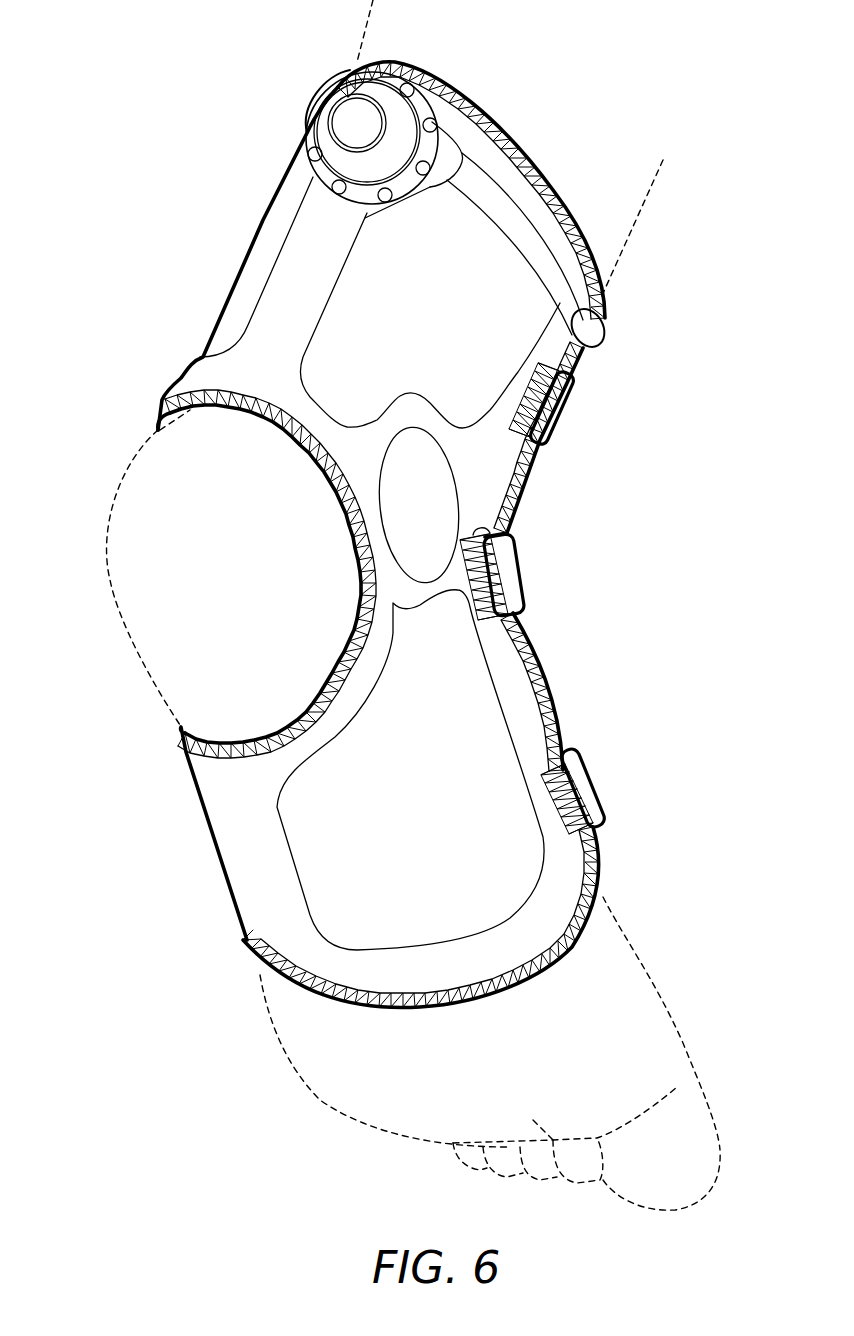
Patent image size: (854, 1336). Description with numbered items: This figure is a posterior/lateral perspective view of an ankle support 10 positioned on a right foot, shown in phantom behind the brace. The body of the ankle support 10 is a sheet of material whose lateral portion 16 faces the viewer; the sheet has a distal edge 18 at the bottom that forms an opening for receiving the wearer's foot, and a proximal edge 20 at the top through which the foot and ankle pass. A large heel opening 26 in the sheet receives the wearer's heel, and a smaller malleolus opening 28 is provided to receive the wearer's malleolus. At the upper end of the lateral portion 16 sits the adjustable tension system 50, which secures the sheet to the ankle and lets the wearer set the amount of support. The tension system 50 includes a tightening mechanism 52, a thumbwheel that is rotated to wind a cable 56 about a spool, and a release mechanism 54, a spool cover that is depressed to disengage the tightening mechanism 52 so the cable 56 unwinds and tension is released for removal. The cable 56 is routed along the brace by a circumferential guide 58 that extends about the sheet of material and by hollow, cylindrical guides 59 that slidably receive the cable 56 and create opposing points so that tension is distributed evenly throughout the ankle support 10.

The ankle support 10 is at (197, 325).
The lateral portion 16 is at (563, 867).
The distal edge 18 is at (583, 937).
The proximal edge 20 is at (552, 145).
The heel opening 26 is at (190, 555).
The malleolus opening 28 is at (440, 498).
The adjustable tension system 50 is at (308, 125).
The tightening mechanism 52 is at (307, 170).
The release mechanism 54 is at (330, 92).
The cable 56 is at (553, 673).
The circumferential guide 58 is at (560, 278).
The guide 59 is at (592, 782).